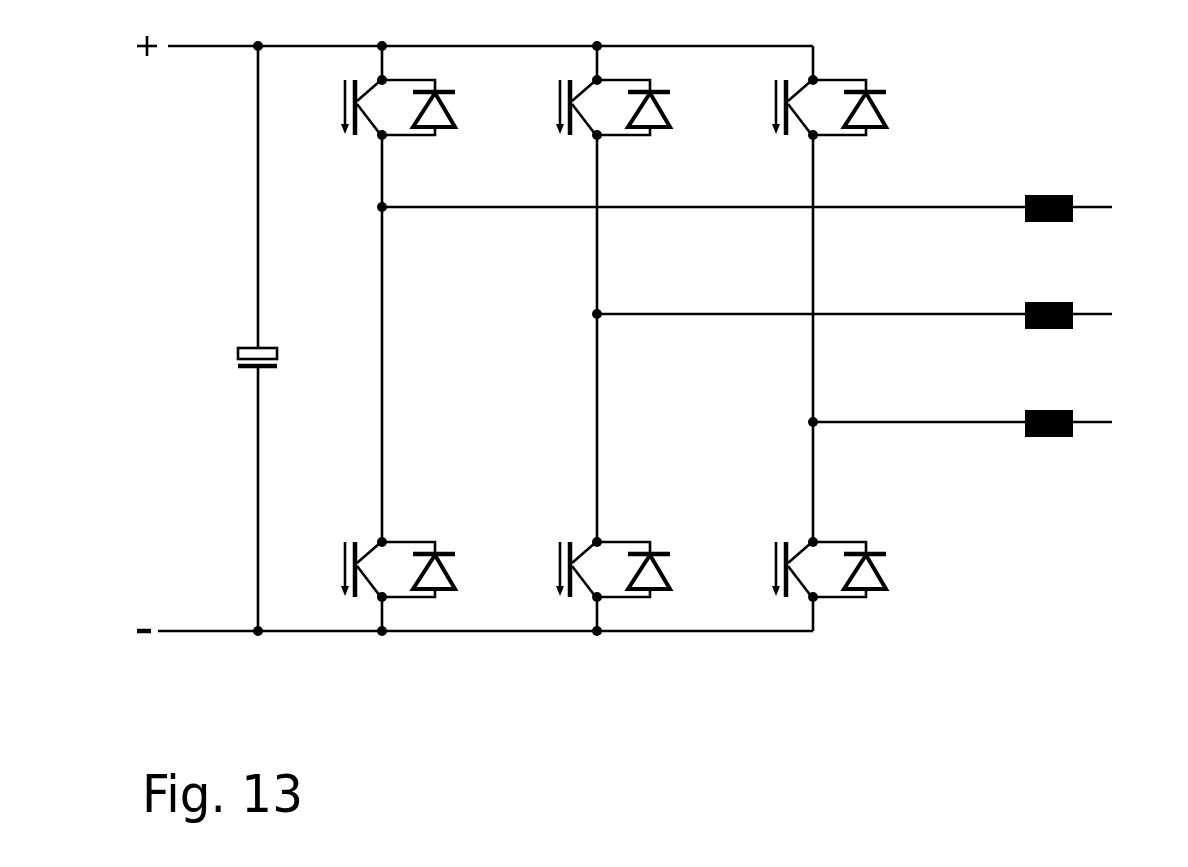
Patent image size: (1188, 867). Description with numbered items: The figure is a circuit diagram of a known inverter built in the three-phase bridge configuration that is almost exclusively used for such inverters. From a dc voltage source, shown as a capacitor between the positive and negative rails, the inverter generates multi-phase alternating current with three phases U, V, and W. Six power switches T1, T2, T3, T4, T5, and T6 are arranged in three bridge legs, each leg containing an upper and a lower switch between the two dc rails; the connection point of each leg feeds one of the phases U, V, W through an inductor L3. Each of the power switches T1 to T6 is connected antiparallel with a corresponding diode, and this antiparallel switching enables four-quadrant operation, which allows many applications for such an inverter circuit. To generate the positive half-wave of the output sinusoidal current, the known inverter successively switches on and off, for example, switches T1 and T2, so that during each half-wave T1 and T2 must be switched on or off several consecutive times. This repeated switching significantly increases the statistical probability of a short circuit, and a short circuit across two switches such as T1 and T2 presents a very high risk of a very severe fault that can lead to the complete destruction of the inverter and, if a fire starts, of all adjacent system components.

The power switch T1 is at (371, 107).
The power switch T2 is at (372, 569).
The power switch T3 is at (587, 107).
The power switch T4 is at (587, 569).
The power switch T5 is at (802, 107).
The power switch T6 is at (803, 569).
The output inductor L3 is at (1049, 290).
The phase U is at (763, 209).
The phase V is at (870, 316).
The phase W is at (980, 424).